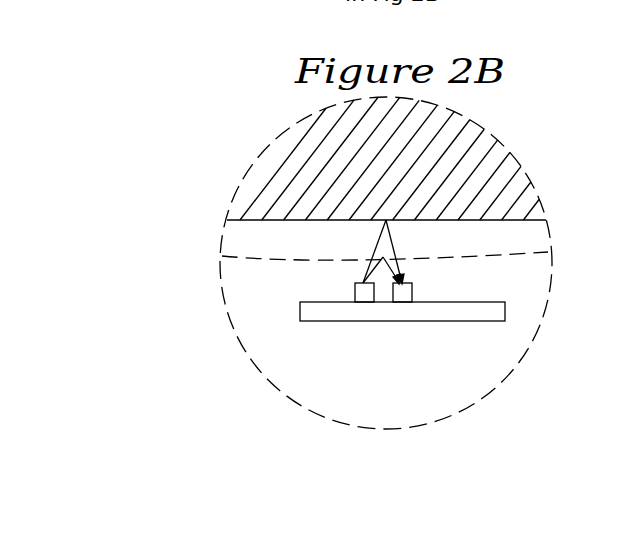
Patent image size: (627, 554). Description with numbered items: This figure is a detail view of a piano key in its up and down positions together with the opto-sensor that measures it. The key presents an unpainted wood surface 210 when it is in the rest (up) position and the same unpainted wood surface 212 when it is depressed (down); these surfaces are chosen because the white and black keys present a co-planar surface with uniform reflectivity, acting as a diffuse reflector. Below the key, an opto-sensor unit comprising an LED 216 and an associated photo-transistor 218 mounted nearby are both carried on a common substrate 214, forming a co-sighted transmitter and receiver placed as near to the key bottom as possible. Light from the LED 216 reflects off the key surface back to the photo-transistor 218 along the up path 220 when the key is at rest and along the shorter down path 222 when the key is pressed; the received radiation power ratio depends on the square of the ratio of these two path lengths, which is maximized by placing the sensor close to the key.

The unpainted wood surface 210 is at (253, 214).
The unpainted wood surface 212 is at (228, 249).
The substrate 214 is at (505, 321).
The LED 216 is at (356, 285).
The photo-transistor 218 is at (392, 291).
The PathLength up 220 is at (397, 255).
The PathLength down 222 is at (396, 270).